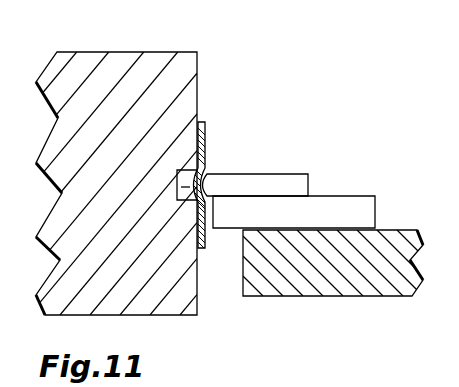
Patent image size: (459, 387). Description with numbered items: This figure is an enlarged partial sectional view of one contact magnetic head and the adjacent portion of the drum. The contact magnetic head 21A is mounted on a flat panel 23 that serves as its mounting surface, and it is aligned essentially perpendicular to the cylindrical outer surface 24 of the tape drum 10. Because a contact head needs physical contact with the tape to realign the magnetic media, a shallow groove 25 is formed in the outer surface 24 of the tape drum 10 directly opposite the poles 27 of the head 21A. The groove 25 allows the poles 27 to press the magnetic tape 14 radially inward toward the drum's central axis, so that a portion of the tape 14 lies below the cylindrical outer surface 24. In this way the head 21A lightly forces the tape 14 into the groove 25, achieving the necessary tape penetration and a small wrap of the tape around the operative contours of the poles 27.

The tape drum 10 is at (156, 56).
The cylindrical outer surface 24 is at (199, 84).
The magnetic tape 14 is at (207, 137).
The groove 25 is at (203, 180).
The poles 27 is at (253, 175).
The contact magnetic head 21A is at (333, 194).
The flat panel 23 is at (315, 298).